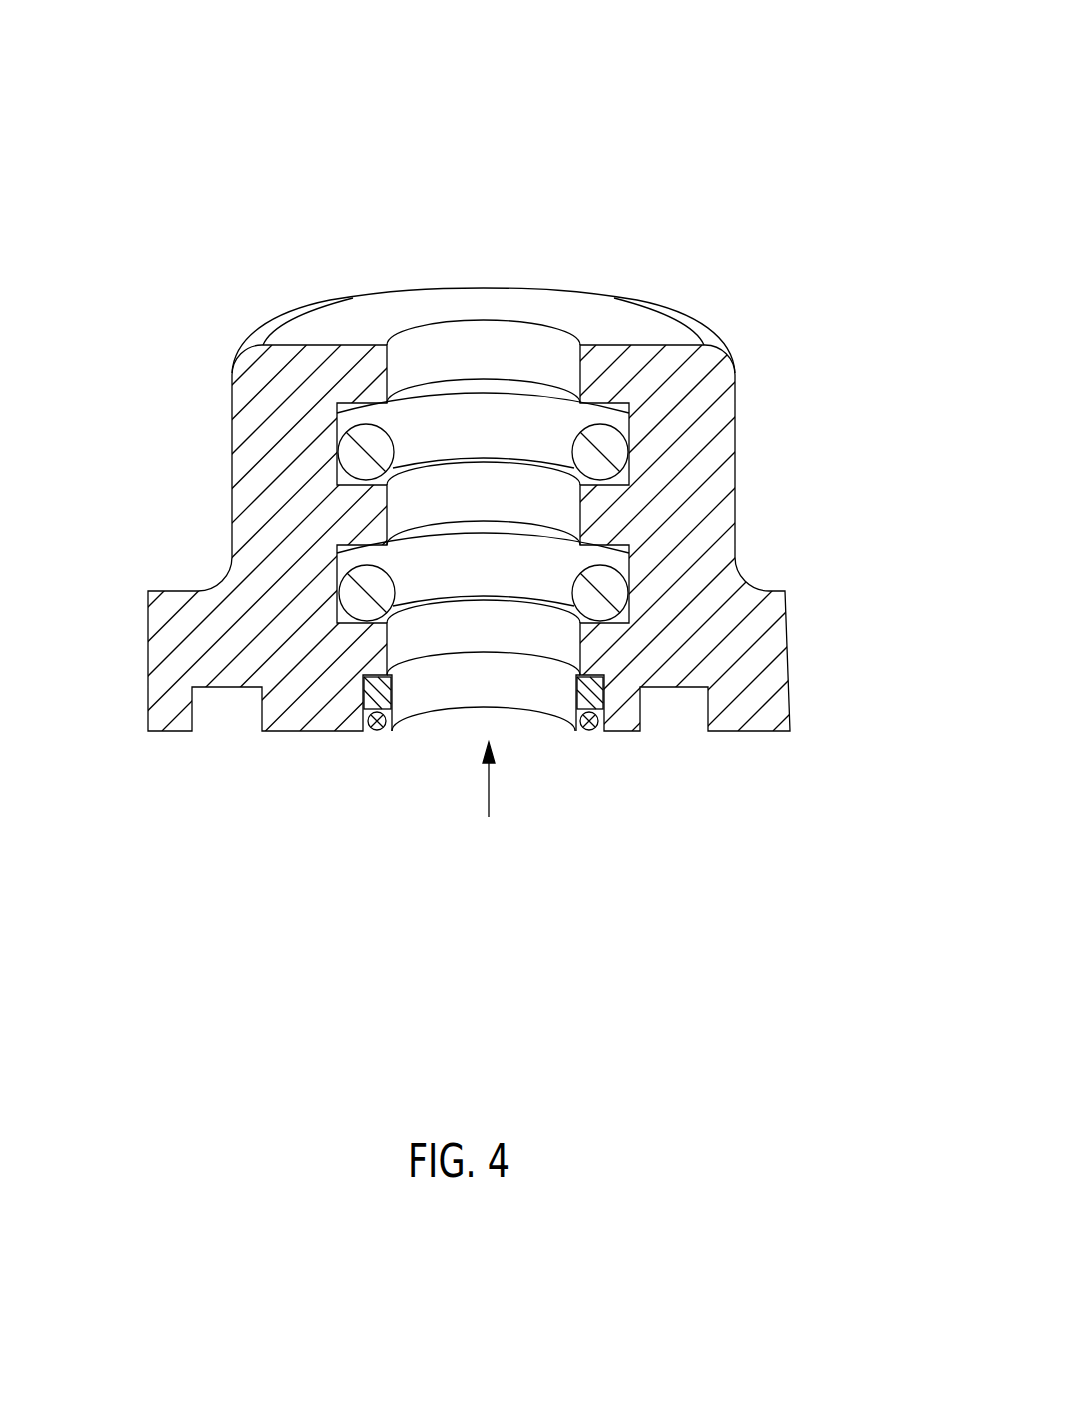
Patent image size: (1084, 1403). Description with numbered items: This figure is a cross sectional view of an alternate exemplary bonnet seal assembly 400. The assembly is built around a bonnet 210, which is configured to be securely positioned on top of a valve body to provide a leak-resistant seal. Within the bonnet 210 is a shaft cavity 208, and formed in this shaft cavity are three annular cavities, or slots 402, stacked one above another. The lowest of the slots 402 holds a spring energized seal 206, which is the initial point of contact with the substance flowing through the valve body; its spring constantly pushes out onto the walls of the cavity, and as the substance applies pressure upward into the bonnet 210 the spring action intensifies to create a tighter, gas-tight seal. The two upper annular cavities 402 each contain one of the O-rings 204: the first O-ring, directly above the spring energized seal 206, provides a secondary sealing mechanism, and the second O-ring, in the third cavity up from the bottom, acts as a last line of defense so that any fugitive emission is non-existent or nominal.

The bonnet seal assembly 400 is at (542, 461).
The bonnet 210 is at (393, 307).
The shaft cavity 208 is at (476, 302).
The spring energized seal 206 is at (555, 688).
The O-rings 204 is at (358, 596).
The annular cavities 402 is at (578, 677).